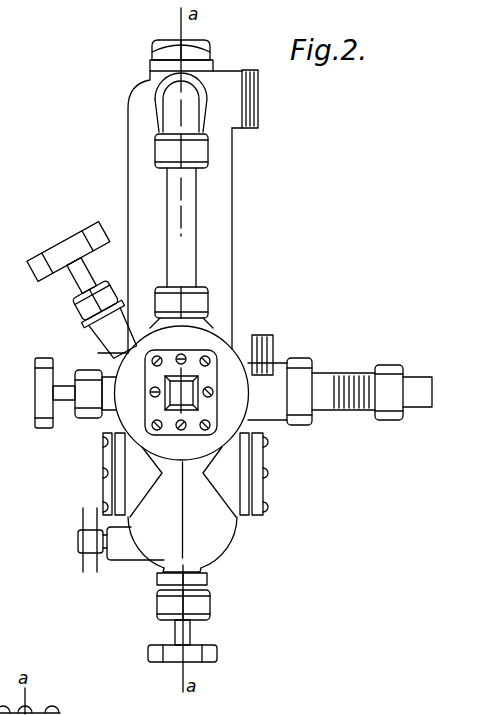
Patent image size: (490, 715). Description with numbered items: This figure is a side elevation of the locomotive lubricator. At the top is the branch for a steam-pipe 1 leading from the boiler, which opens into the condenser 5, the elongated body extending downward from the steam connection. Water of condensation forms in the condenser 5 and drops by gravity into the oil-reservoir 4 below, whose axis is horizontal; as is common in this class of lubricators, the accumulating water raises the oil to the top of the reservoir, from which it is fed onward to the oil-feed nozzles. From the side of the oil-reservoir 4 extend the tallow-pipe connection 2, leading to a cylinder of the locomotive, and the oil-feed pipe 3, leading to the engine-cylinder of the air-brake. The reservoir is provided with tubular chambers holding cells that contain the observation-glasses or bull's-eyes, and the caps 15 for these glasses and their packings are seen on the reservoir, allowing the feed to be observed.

The branch for a steam-pipe 1 is at (260, 99).
The tallow-pipe connection 2 is at (265, 343).
The oil-feed pipe 3 is at (340, 385).
The oil-reservoir 4 is at (163, 509).
The condenser 5 is at (189, 212).
The cap 15 is at (103, 455).